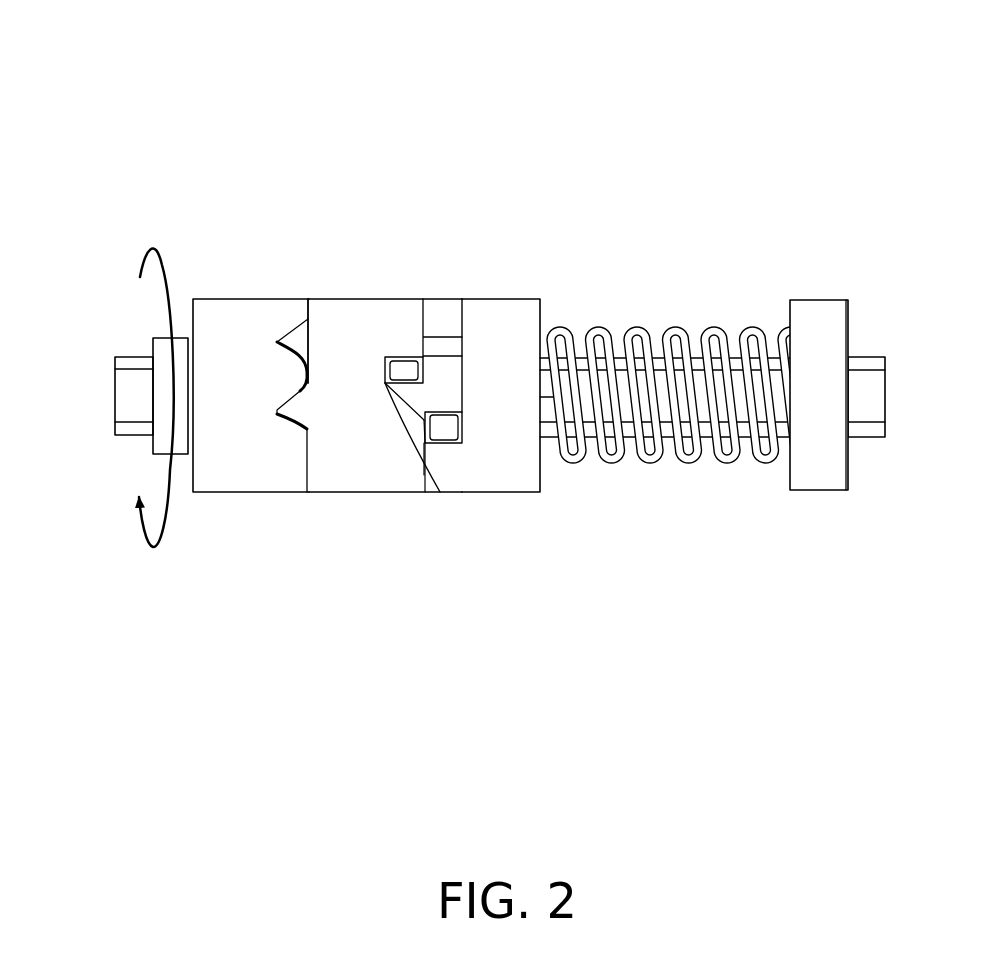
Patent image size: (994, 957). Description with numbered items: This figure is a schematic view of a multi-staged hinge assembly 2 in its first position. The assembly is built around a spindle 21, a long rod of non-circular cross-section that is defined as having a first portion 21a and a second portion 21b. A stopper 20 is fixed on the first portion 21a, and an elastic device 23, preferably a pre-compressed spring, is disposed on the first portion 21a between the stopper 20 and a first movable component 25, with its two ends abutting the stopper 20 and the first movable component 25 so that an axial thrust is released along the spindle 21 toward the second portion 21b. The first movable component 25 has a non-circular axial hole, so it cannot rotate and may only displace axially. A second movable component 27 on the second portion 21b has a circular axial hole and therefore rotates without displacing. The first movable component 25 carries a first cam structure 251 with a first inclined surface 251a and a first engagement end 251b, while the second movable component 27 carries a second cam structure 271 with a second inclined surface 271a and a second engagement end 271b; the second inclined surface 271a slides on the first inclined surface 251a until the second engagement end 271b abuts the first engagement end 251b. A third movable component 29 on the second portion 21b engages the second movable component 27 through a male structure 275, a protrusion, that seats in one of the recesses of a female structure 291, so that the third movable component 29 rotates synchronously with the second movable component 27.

The multi-staged hinge assembly 2 is at (215, 138).
The stopper 20 is at (840, 487).
The spindle 21 is at (115, 403).
The first portion 21a is at (888, 722).
The second portion 21b is at (532, 725).
The elastic device 23 is at (738, 463).
The first movable component 25 is at (503, 299).
The first cam structure 251 is at (440, 478).
The first inclined surface 251a is at (442, 478).
The first engagement end 251b is at (443, 422).
The second movable component 27 is at (367, 299).
The second cam structure 271 is at (418, 470).
The second inclined surface 271a is at (405, 440).
The second engagement end 271b is at (403, 362).
The male structure 275 is at (303, 428).
The third movable component 29 is at (253, 299).
The female structure 291 is at (303, 425).